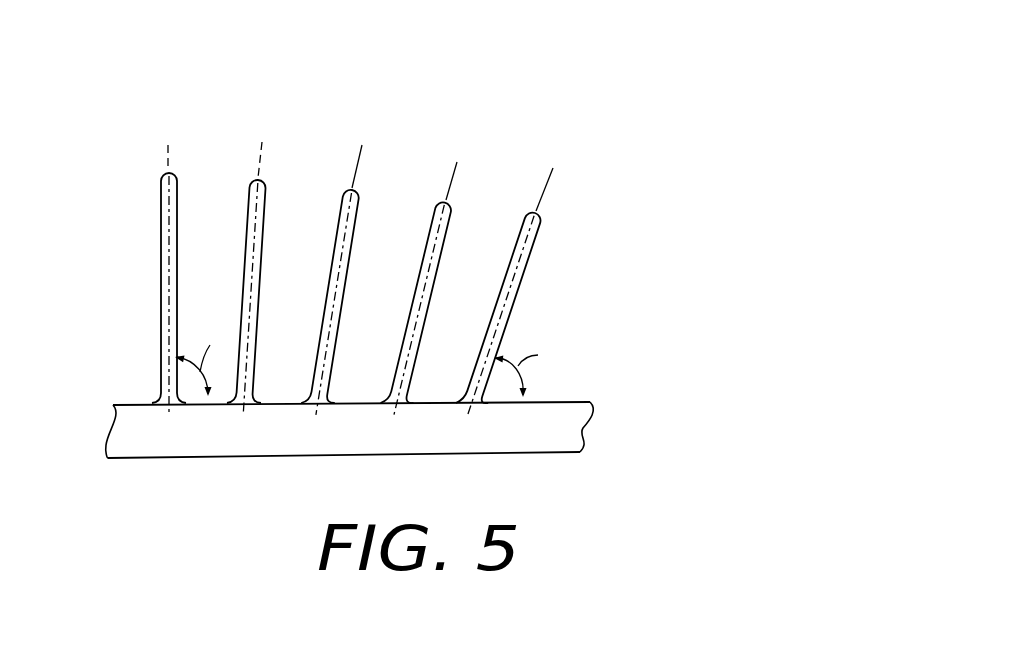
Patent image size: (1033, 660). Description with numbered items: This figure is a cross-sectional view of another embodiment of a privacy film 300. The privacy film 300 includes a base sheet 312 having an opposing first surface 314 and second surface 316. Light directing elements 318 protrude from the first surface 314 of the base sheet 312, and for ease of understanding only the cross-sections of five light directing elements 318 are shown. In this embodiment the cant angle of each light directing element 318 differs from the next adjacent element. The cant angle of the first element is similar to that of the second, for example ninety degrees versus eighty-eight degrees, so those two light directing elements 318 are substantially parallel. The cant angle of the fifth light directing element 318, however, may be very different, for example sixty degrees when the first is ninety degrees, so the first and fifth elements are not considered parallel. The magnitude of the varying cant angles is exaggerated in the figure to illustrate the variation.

The privacy film 300 is at (522, 73).
The base sheet 312 is at (562, 427).
The first surface 314 is at (567, 402).
The second surface 316 is at (555, 453).
The light directing elements 318 is at (528, 261).